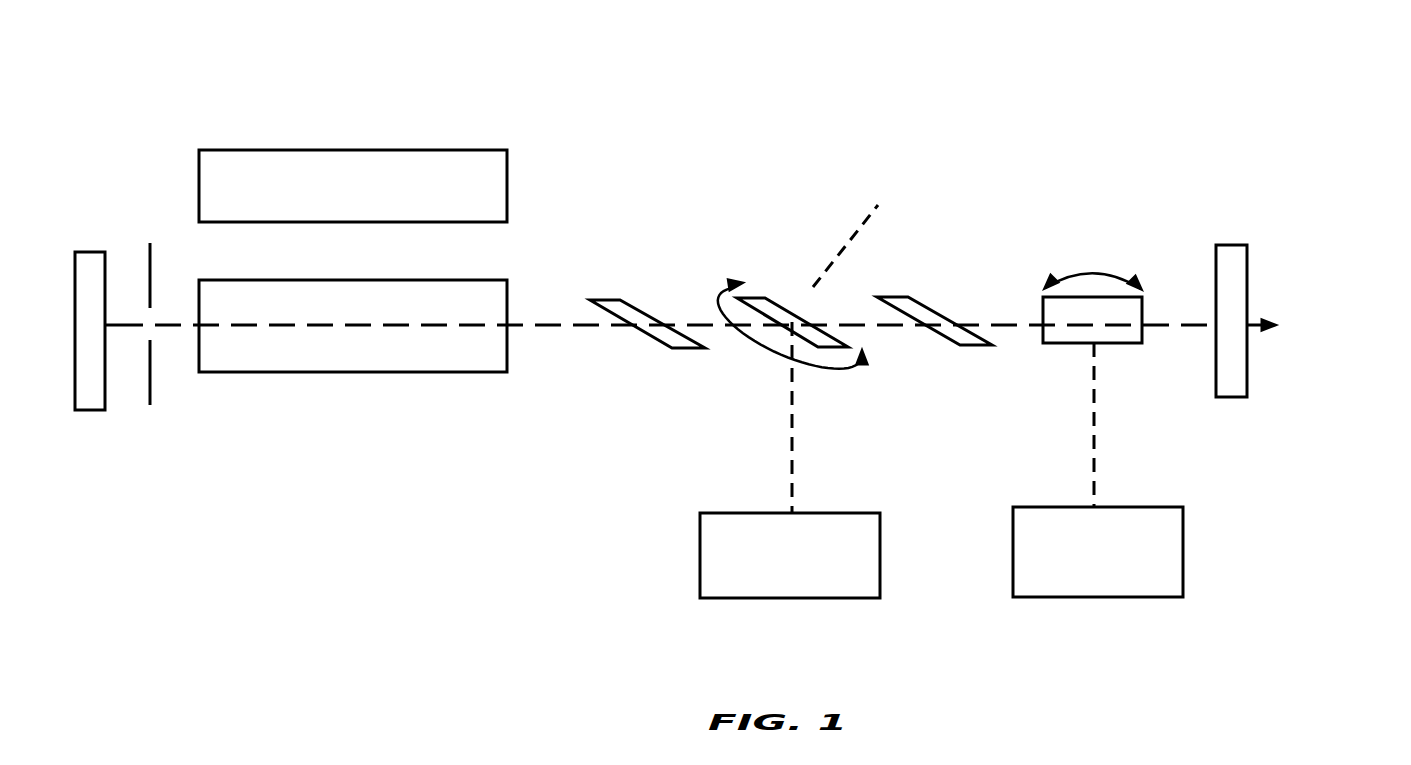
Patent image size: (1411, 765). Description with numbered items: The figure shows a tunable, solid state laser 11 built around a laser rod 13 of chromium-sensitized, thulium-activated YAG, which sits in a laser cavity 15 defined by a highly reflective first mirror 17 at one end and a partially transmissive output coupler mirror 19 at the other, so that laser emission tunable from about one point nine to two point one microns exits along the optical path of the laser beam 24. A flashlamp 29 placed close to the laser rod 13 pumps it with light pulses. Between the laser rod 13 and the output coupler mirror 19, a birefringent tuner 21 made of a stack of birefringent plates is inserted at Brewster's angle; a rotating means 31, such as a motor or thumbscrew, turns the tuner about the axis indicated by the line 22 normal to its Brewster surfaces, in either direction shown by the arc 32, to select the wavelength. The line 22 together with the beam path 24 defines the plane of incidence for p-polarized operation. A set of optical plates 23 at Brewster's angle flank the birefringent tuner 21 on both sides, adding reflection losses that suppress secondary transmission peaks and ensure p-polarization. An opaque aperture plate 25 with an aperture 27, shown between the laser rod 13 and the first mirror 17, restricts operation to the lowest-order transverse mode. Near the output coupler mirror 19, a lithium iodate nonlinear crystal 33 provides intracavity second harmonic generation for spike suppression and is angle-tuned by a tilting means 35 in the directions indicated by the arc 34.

The tunable solid state laser 11 is at (640, 148).
The laser rod 13 is at (508, 293).
The laser cavity 15 is at (942, 190).
The first reflective element 17 is at (93, 252).
The output coupler mirror 19 is at (1233, 245).
The birefringent tuner 21 is at (766, 298).
The line normal to the Brewster surfaces 22 is at (833, 262).
The optical plates 23 is at (648, 338).
The optical path of the laser beam 24 is at (1193, 316).
The aperture plate 25 is at (156, 350).
The aperture 27 is at (140, 338).
The flashlamp 29 is at (358, 150).
The rotating means 31 is at (881, 547).
The arc 32 is at (778, 346).
The nonlinear crystal 33 is at (1115, 346).
The tilt direction 34 is at (1093, 268).
The tilting means 35 is at (1184, 538).